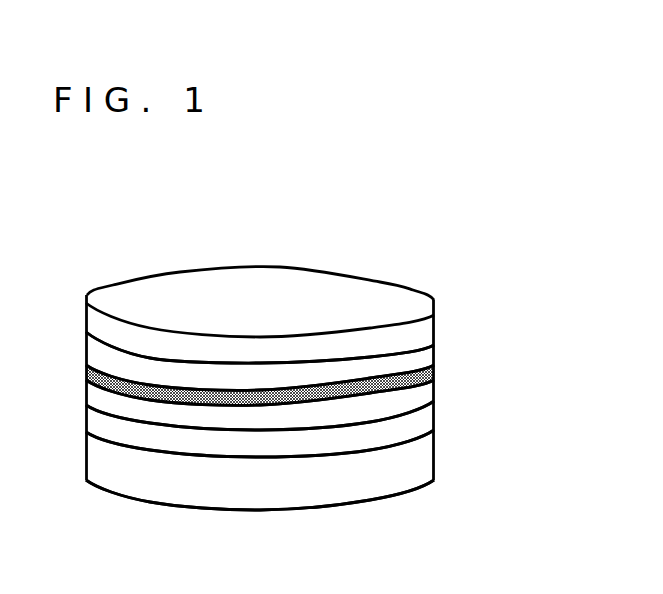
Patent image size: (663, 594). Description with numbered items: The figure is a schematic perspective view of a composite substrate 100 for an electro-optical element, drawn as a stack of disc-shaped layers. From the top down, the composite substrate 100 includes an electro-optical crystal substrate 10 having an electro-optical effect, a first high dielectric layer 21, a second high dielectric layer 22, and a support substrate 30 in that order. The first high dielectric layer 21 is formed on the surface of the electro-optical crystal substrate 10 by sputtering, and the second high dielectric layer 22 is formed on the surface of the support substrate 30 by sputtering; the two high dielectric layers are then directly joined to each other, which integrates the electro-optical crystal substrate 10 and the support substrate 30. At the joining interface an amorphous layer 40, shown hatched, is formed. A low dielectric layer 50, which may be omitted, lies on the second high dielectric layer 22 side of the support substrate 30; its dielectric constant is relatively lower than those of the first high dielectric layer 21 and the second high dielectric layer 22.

The composite substrate 100 is at (447, 239).
The electro-optical crystal substrate 10 is at (437, 315).
The first high dielectric layer 21 is at (437, 350).
The amorphous layer 40 is at (437, 368).
The second high dielectric layer 22 is at (437, 392).
The low dielectric layer 50 is at (437, 418).
The support substrate 30 is at (437, 458).